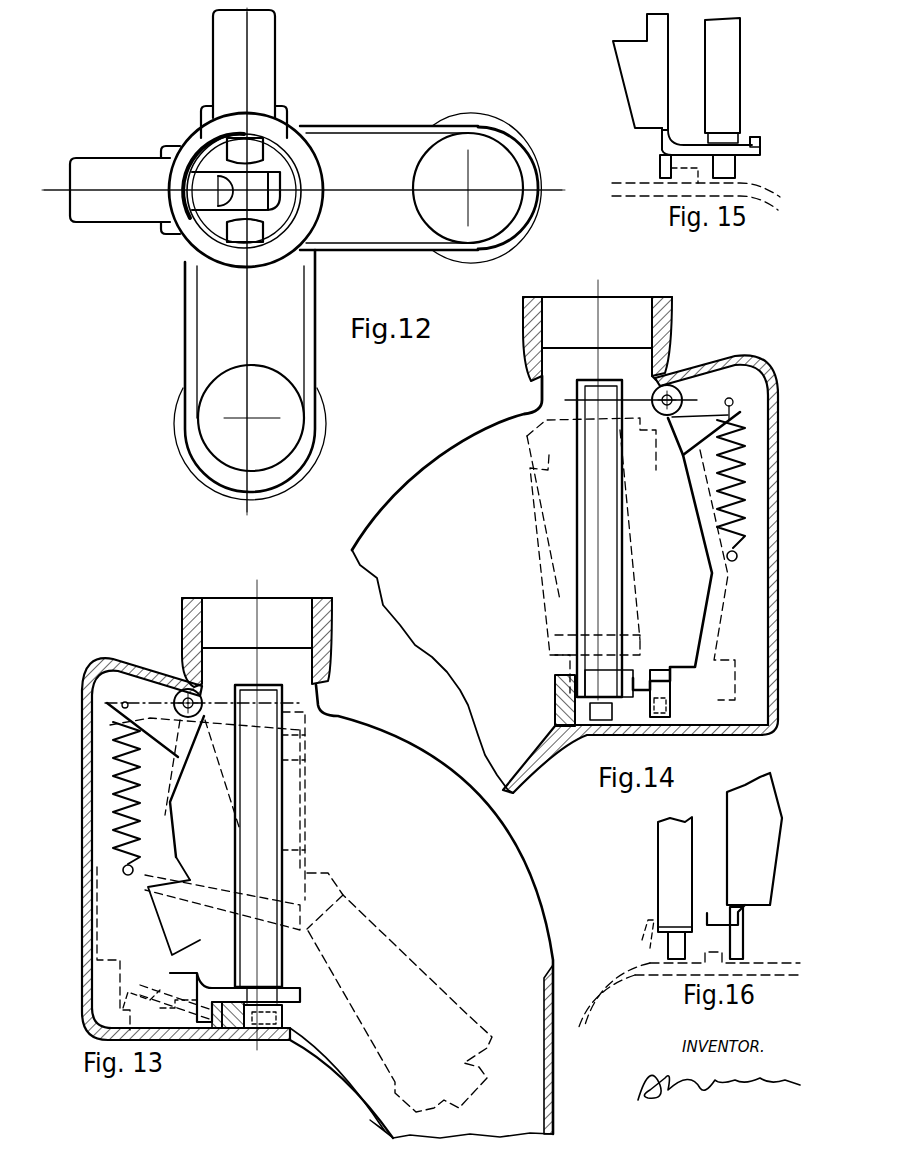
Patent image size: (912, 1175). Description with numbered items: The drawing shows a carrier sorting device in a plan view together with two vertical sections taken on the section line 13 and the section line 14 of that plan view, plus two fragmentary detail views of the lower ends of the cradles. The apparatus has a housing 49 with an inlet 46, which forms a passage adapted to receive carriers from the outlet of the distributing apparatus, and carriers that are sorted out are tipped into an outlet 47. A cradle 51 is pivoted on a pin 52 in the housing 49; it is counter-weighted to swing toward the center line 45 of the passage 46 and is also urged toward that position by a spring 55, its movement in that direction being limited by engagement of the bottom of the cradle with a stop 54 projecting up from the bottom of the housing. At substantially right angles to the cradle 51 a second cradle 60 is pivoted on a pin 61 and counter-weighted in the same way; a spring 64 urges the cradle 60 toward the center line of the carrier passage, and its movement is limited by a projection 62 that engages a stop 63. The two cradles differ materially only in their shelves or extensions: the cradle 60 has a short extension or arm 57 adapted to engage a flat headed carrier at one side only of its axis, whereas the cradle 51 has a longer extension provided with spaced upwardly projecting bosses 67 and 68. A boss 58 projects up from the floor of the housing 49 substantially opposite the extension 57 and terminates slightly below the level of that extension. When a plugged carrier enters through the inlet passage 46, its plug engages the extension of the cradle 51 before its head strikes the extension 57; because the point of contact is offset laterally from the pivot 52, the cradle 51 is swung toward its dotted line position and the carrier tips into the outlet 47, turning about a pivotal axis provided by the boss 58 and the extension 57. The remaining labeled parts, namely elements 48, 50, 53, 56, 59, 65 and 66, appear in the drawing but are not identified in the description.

In FIG. 12, the section line 13 is at (42, 190).
In FIG. 12, the section line 14 is at (247, 8).
In FIG. 13, the center line 45 is at (260, 606).
In FIG. 12, the inlet passage 46 is at (276, 150).
In FIG. 14, the inlet passage 46 is at (624, 312).
In FIG. 13, the inlet passage 46 is at (203, 618).
In FIG. 12, the outlet 47 is at (474, 150).
In FIG. 13, the outlet 47 is at (460, 1136).
In FIG. 12, the lower tubular boss 48 is at (210, 402).
In FIG. 13, the housing 49 is at (98, 676).
In FIG. 13, the valve stem guide 50 is at (305, 832).
In FIG. 12, the cradle 51 is at (284, 206).
In FIG. 15, the cradle 51 is at (618, 66).
In FIG. 13, the cradle 51 is at (154, 901).
In FIG. 16, the cradle 51 is at (657, 842).
In FIG. 13, the pin 52 is at (200, 697).
In FIG. 15, the stud 53 is at (663, 172).
In FIG. 13, the stud 53 is at (202, 1026).
In FIG. 16, the stud 53 is at (668, 950).
In FIG. 13, the stop 54 is at (226, 1028).
In FIG. 13, the spring 55 is at (118, 773).
In FIG. 13, the valve stem 56 is at (288, 788).
In FIG. 12, the extension or arm 57 is at (208, 156).
In FIG. 14, the extension or arm 57 is at (650, 705).
In FIG. 16, the extension or arm 57 is at (712, 914).
In FIG. 12, the boss 58 is at (275, 236).
In FIG. 14, the boss 58 is at (560, 700).
In FIG. 16, the boss 58 is at (633, 922).
In FIG. 13, the valve member 59 is at (374, 934).
In FIG. 15, the second cradle 60 is at (742, 52).
In FIG. 14, the second cradle 60 is at (700, 628).
In FIG. 16, the second cradle 60 is at (780, 800).
In FIG. 14, the pin 61 is at (676, 384).
In FIG. 15, the projection 62 is at (737, 168).
In FIG. 14, the projection 62 is at (675, 712).
In FIG. 13, the projection 62 is at (290, 1016).
In FIG. 16, the projection 62 is at (745, 930).
In FIG. 14, the stop 63 is at (650, 697).
In FIG. 14, the spring 64 is at (743, 460).
In FIG. 14, the lever extension 65 is at (545, 420).
In FIG. 14, the link 66 is at (545, 516).
In FIG. 12, the boss 67 is at (226, 198).
In FIG. 15, the boss 67 is at (686, 136).
In FIG. 12, the boss 68 is at (290, 176).
In FIG. 15, the boss 68 is at (758, 136).
In FIG. 16, the boss 68 is at (688, 928).